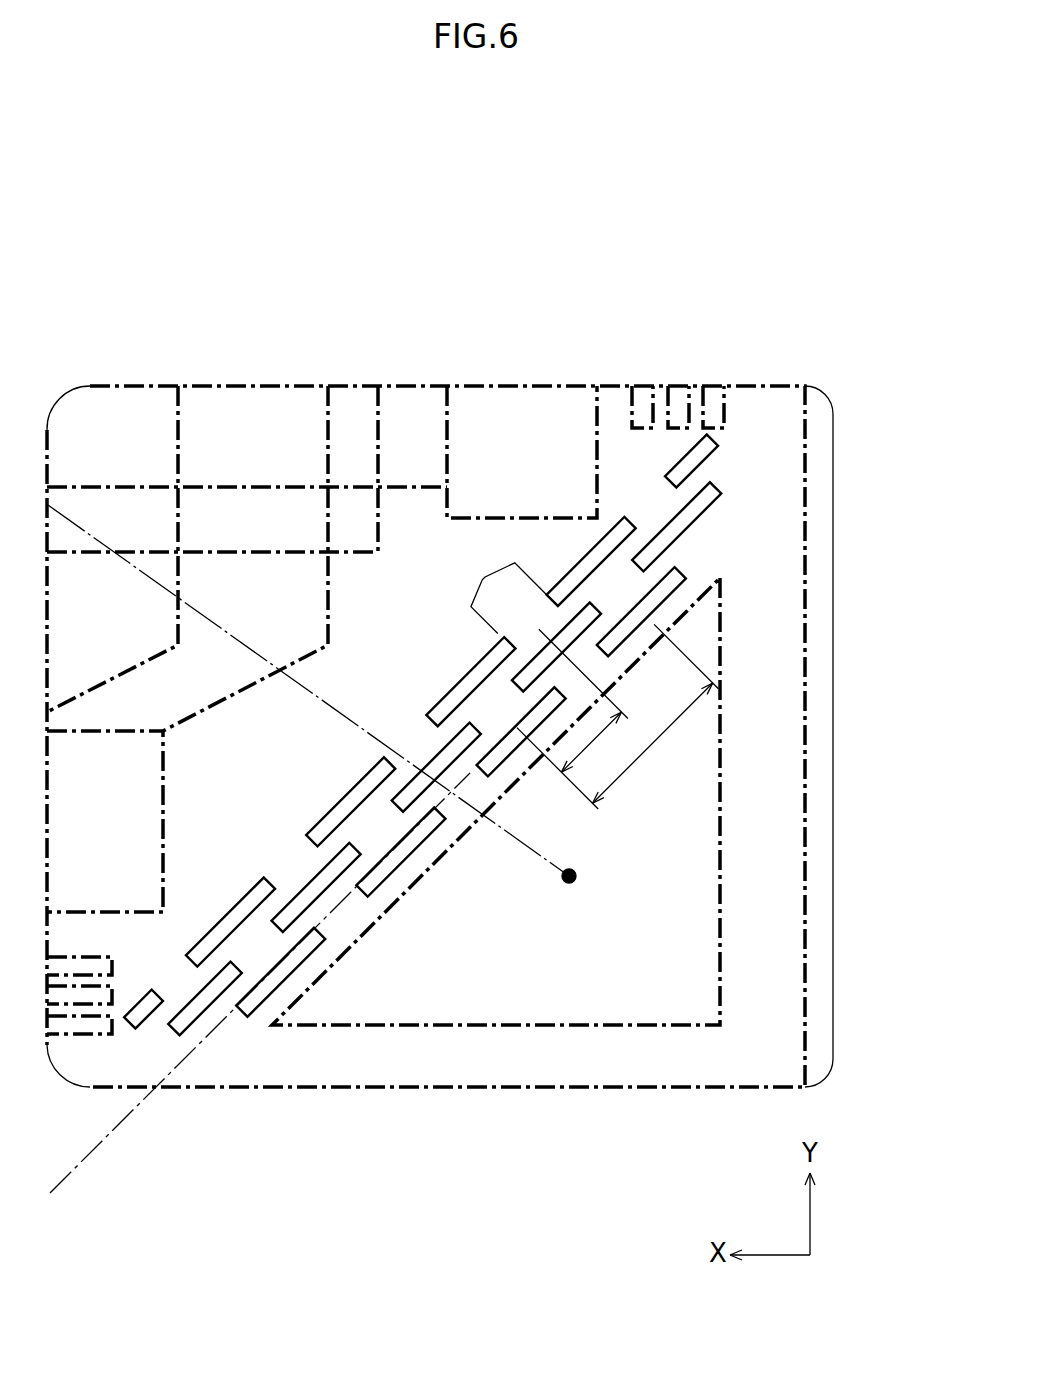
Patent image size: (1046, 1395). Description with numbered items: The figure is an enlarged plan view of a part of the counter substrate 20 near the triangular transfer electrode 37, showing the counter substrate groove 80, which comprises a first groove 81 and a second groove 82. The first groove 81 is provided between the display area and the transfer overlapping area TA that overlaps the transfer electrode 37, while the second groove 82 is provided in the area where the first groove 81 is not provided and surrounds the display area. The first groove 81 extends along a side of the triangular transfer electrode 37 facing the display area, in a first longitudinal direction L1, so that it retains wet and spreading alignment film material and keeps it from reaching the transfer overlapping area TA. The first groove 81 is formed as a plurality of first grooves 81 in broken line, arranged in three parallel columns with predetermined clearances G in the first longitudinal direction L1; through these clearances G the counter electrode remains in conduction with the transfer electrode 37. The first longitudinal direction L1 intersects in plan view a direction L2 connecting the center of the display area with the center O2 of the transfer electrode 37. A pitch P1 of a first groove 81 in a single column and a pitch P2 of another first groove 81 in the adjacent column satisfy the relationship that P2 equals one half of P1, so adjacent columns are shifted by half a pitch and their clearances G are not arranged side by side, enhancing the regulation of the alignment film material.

The counter substrate 20 is at (755, 403).
The transfer electrode 37 is at (683, 888).
The counter substrate groove 80 is at (544, 732).
The first groove 81 is at (697, 460).
The second groove 82 is at (723, 413).
The transfer overlapping area TA is at (677, 827).
The clearance G is at (483, 578).
The pitch P1 is at (626, 716).
The pitch P2 is at (569, 719).
The first longitudinal direction L1 is at (108, 1138).
The direction L2 is at (80, 526).
The center of the transfer electrode O2 is at (573, 893).